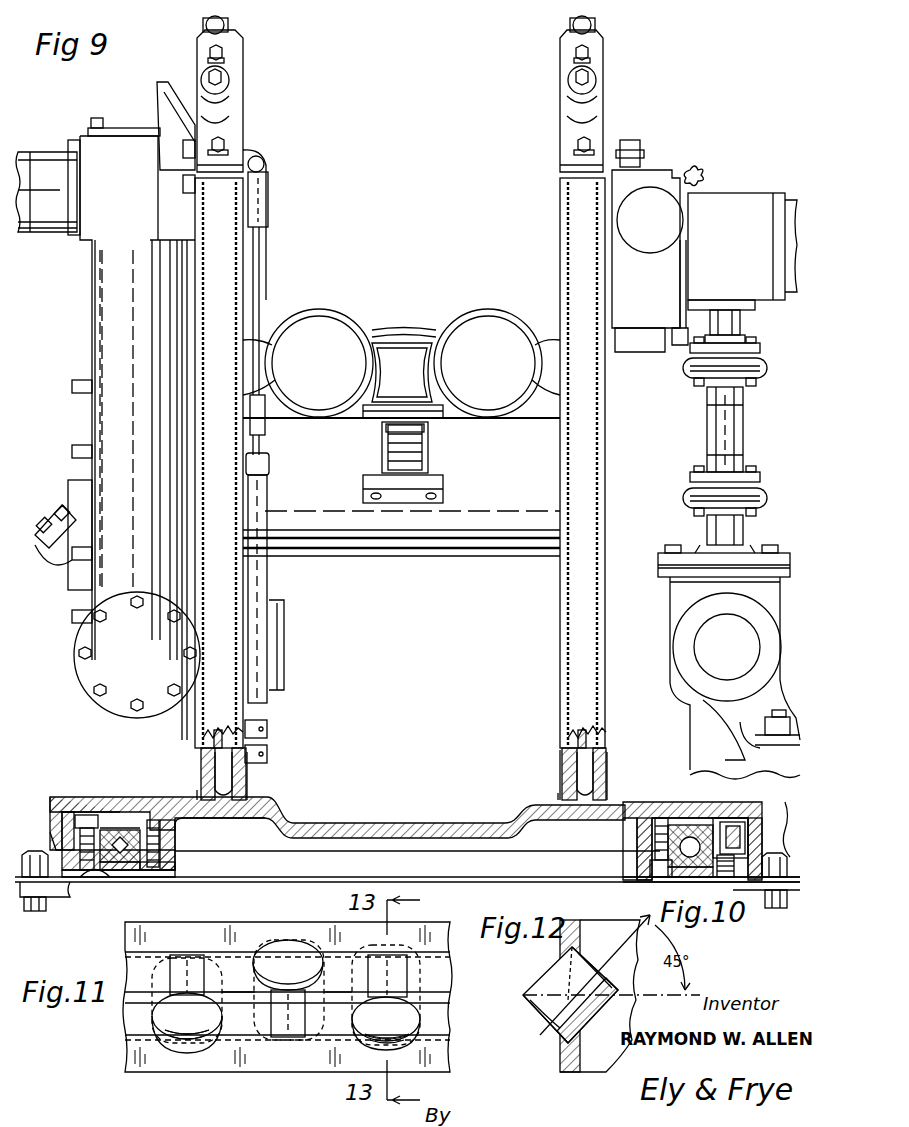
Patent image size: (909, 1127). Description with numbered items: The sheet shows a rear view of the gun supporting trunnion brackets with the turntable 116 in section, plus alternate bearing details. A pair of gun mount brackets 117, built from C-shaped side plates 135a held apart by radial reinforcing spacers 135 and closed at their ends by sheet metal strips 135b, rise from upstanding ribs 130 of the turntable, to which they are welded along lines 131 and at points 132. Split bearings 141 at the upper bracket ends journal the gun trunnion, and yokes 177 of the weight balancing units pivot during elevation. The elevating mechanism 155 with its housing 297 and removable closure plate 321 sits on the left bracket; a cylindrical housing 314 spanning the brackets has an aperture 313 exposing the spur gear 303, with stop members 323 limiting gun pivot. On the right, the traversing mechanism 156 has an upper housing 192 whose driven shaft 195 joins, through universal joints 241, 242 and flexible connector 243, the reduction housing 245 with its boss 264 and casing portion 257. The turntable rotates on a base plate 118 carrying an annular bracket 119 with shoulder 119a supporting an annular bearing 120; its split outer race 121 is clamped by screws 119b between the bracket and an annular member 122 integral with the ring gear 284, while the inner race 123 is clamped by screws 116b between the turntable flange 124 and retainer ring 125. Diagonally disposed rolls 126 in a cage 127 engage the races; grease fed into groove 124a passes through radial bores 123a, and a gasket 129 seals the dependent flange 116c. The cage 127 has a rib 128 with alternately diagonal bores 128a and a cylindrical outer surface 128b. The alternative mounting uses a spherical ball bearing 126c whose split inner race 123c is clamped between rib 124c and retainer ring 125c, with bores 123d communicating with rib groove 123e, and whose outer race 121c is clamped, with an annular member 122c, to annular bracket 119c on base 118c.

In FIG. 9, the gun mount bracket 117 is at (225, 266).
In FIG. 9, the bearing 141 is at (197, 68).
In FIG. 9, the elevating mechanism 155 is at (85, 335).
In FIG. 9, the housing 297 is at (100, 276).
In FIG. 9, the removable closure plate 321 is at (95, 672).
In FIG. 9, the sheet metal strip 135b is at (232, 598).
In FIG. 9, the yoke 177 is at (345, 292).
In FIG. 9, the stop member 323 is at (430, 413).
In FIG. 9, the aperture 313 is at (425, 446).
In FIG. 9, the spur gear 303 is at (382, 432).
In FIG. 9, the cylindrical housing 314 is at (490, 535).
In FIG. 9, the traversing mechanism 156 is at (704, 239).
In FIG. 9, the upper housing 192 is at (645, 170).
In FIG. 9, the driven shaft 195 is at (735, 200).
In FIG. 9, the flexible connector 243 is at (730, 430).
In FIG. 9, the universal joint 241 is at (770, 358).
In FIG. 9, the universal joint 242 is at (790, 472).
In FIG. 9, the boss 264 is at (657, 562).
In FIG. 9, the housing 245 is at (708, 678).
In FIG. 9, the casing portion 257 is at (686, 638).
In FIG. 9, the reinforcing spacer 135 is at (210, 730).
In FIG. 9, the weld point 132 is at (200, 755).
In FIG. 9, the side plate 135a is at (562, 765).
In FIG. 9, the weld line 131 is at (232, 788).
In FIG. 9, the upstanding rib 130 is at (238, 790).
In FIG. 9, the turntable 116 is at (262, 808).
In FIG. 9, the annular flange 124 is at (183, 826).
In FIG. 9, the annular groove 124a is at (185, 851).
In FIG. 9, the retainer ring 125 is at (180, 870).
In FIG. 9, the annular member 122 is at (62, 812).
In FIG. 9, the dependent flange 116c is at (62, 828).
In FIG. 10, the dependent flange 116c is at (645, 786).
In FIG. 9, the sealing gasket 129 is at (56, 850).
In FIG. 9, the socket-headed screw 119b is at (86, 815).
In FIG. 9, the outer race 121 is at (120, 830).
In FIG. 9, the annular bearing 120 is at (124, 838).
In FIG. 9, the ring gear 284 is at (100, 828).
In FIG. 9, the cage 127 is at (126, 810).
In FIG. 11, the cage 127 is at (158, 1062).
In FIG. 12, the cage 127 is at (597, 906).
In FIG. 9, the roll 126 is at (152, 820).
In FIG. 11, the roll 126 is at (290, 940).
In FIG. 12, the roll 126 is at (560, 980).
In FIG. 9, the inner race 123 is at (160, 870).
In FIG. 9, the annular bracket 119 is at (115, 870).
In FIG. 9, the socket headed screw 116b is at (150, 880).
In FIG. 9, the radial bore 123a is at (80, 882).
In FIG. 9, the shoulder 119a is at (75, 895).
In FIG. 9, the base plate 118 is at (60, 905).
In FIG. 10, the split inner race 123c is at (672, 802).
In FIG. 10, the outer race 121c is at (692, 825).
In FIG. 10, the rib 124c is at (652, 840).
In FIG. 10, the annular rib groove 123e is at (657, 850).
In FIG. 10, the retainer ring 125c is at (655, 868).
In FIG. 10, the housing 122c is at (758, 828).
In FIG. 10, the spherical ball bearing 126c is at (725, 845).
In FIG. 10, the annular bracket 119c is at (745, 880).
In FIG. 10, the bore 123d is at (700, 878).
In FIG. 10, the base 118c is at (758, 890).
In FIG. 11, the rib 128 is at (140, 996).
In FIG. 12, the rib 128 is at (527, 997).
In FIG. 11, the bore 128a is at (296, 948).
In FIG. 12, the bore 128a is at (563, 1040).
In FIG. 11, the cylindrical outer surface 128b is at (440, 968).